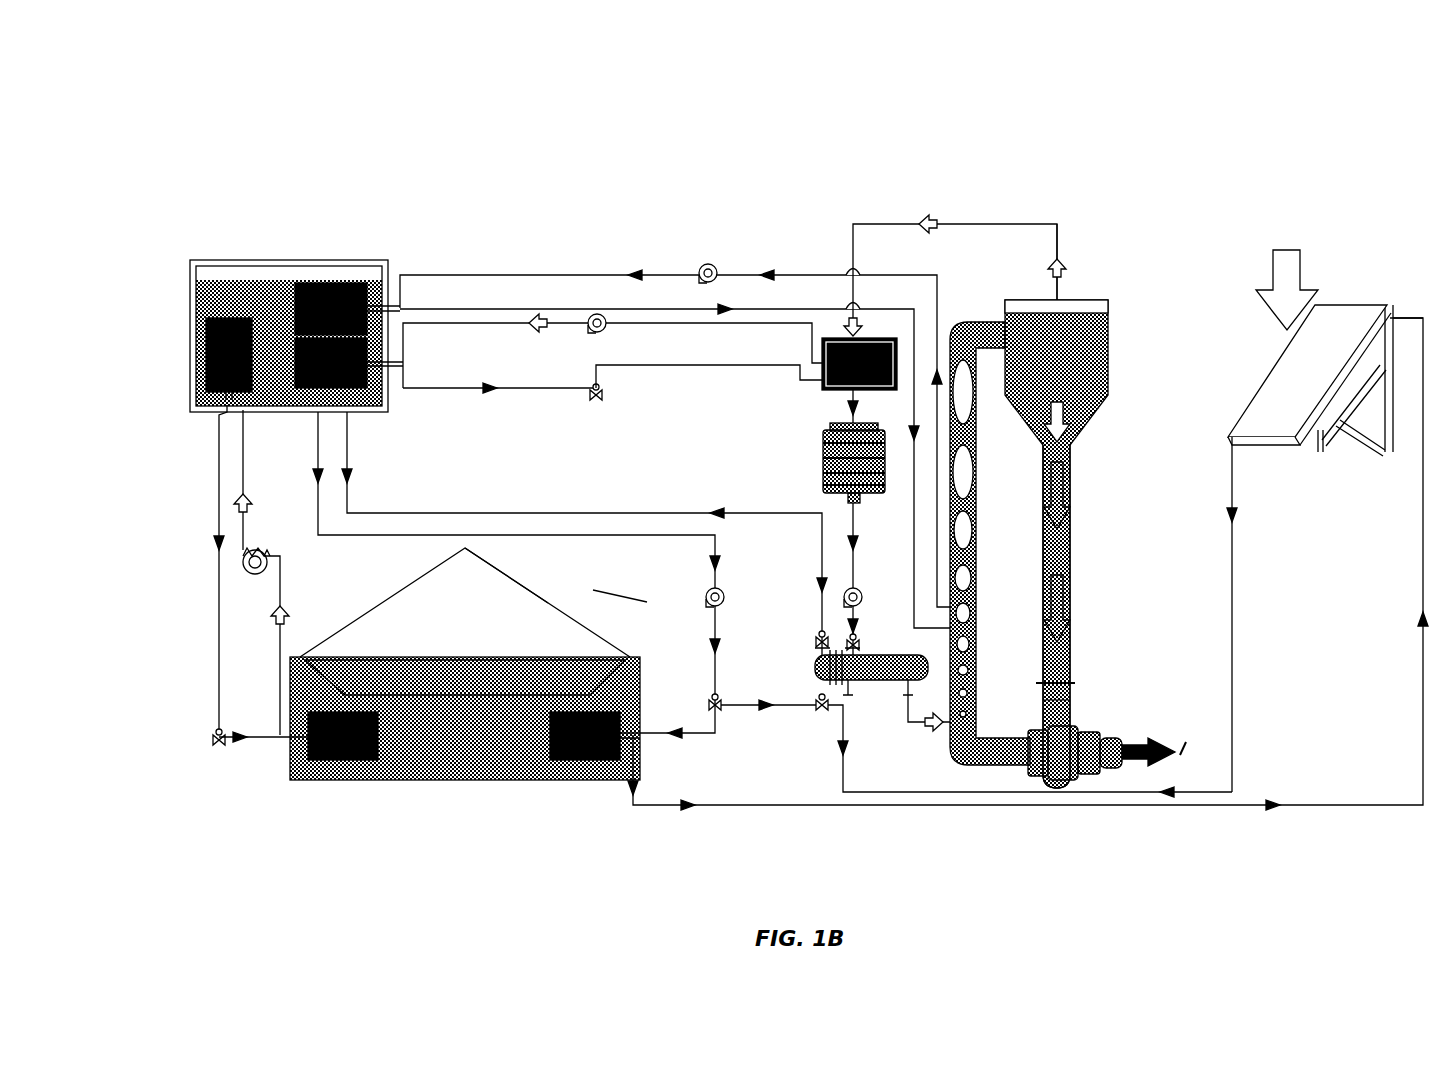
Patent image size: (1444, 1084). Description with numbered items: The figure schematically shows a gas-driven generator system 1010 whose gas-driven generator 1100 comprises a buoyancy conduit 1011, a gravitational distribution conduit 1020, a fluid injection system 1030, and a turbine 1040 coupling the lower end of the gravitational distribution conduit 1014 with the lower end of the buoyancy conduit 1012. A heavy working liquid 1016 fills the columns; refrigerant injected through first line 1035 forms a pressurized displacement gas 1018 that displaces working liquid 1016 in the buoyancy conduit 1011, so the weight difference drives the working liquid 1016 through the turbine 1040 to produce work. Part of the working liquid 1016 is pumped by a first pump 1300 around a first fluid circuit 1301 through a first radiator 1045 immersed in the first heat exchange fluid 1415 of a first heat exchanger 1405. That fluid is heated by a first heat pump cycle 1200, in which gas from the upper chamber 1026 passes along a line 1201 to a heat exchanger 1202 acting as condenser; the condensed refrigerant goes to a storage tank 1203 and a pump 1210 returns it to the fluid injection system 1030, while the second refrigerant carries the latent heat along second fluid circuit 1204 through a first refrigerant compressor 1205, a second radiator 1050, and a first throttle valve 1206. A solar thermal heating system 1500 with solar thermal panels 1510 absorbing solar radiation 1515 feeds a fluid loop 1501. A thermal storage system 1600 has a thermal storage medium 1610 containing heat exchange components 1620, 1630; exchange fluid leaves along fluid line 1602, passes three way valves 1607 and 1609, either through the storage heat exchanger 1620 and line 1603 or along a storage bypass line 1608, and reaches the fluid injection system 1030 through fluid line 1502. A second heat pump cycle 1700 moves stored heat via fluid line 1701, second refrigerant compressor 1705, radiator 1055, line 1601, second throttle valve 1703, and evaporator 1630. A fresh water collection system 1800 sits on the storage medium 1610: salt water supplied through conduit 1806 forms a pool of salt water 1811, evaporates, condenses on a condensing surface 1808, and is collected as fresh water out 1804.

The gas-driven generator system 1010 is at (605, 152).
The first heat exchanger 1405 is at (204, 260).
The first heat exchange fluid 1415 is at (262, 290).
The first radiator 1045 is at (350, 283).
The second radiator 1050 is at (350, 390).
The radiator 1055 is at (205, 365).
The first fluid circuit 1301 is at (745, 272).
The first pump 1300 is at (695, 270).
The gas-driven generator 1100 is at (996, 292).
The second fluid circuit 1204 is at (497, 326).
The first refrigerant compressor 1205 is at (610, 330).
The first throttle valve 1206 is at (608, 398).
The first heat pump cycle 1200 is at (592, 412).
The fluid line 1201 is at (905, 218).
The upper chamber 1026 is at (1068, 300).
The heat exchanger 1202 is at (822, 376).
The storage tank 1203 is at (822, 448).
The pump 1210 is at (863, 606).
The fluid line 1502 is at (495, 515).
The fluid line 1602 is at (585, 592).
The second heat pump cycle 1700 is at (217, 527).
The line 1601 is at (217, 645).
The fluid line 1701 is at (242, 472).
The second refrigerant compressor 1705 is at (265, 548).
The second throttle valve 1703 is at (208, 752).
The thermal storage system 1600 is at (290, 790).
The thermal storage medium 1610 is at (530, 788).
The pool of salt water 1811 is at (440, 668).
The fresh water collection system 1800 is at (365, 615).
The condensing surface 1808 is at (455, 565).
The evaporator 1630 is at (343, 760).
The heat exchanger 1620 is at (588, 760).
The conduit 1806 is at (415, 795).
The fresh water out 1804 is at (675, 672).
The three way valve 1607 is at (721, 713).
The storage bypass line 1608 is at (787, 707).
The three way valve 1609 is at (812, 698).
The fluid injection system 1030 is at (868, 683).
The first line 1035 is at (945, 730).
The line 1603 is at (955, 810).
The working liquid 1016 is at (1060, 355).
The gravitational distribution conduit 1020 is at (1066, 545).
The pressurized displacement gas 1018 is at (968, 405).
The buoyancy conduit 1011 is at (976, 570).
The lower end of the buoyancy conduit 1012 is at (1000, 692).
The lower end of the gravitational distribution conduit 1014 is at (1080, 707).
The turbine 1040 is at (1090, 732).
The solar thermal heating system 1500 is at (1300, 514).
The solar thermal panels 1510 is at (1270, 390).
The solar radiation 1515 is at (1302, 200).
The fluid loop 1501 is at (1233, 700).